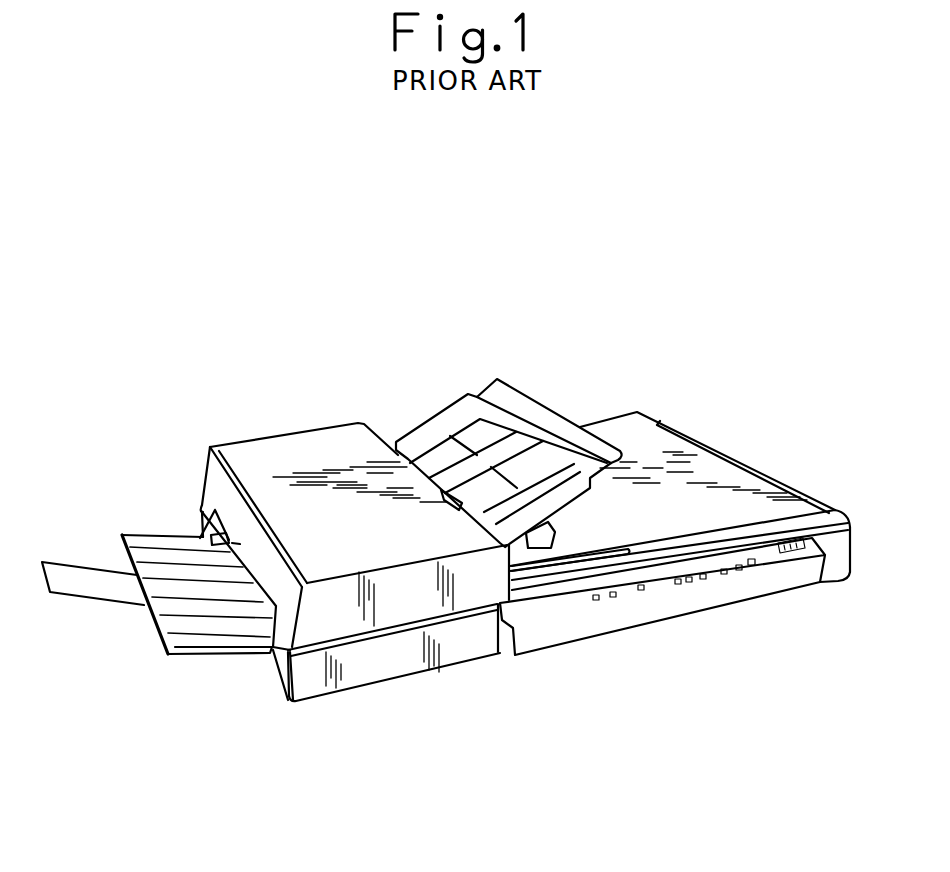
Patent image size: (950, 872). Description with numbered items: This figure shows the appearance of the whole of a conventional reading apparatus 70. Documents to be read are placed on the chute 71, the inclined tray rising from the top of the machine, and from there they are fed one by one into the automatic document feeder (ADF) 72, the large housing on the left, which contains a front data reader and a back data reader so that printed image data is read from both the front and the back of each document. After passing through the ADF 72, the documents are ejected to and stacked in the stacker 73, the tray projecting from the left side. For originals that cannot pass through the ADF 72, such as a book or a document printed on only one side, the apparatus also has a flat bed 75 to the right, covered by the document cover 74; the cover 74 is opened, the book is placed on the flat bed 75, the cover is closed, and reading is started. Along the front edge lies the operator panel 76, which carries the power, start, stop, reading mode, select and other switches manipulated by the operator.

The reading apparatus 70 is at (433, 340).
The chute 71 is at (542, 403).
The automatic document feeder (ADF) 72 is at (308, 450).
The stacker 73 is at (162, 642).
The document cover 74 is at (740, 480).
The flat bed 75 is at (822, 510).
The operator panel 76 is at (668, 592).